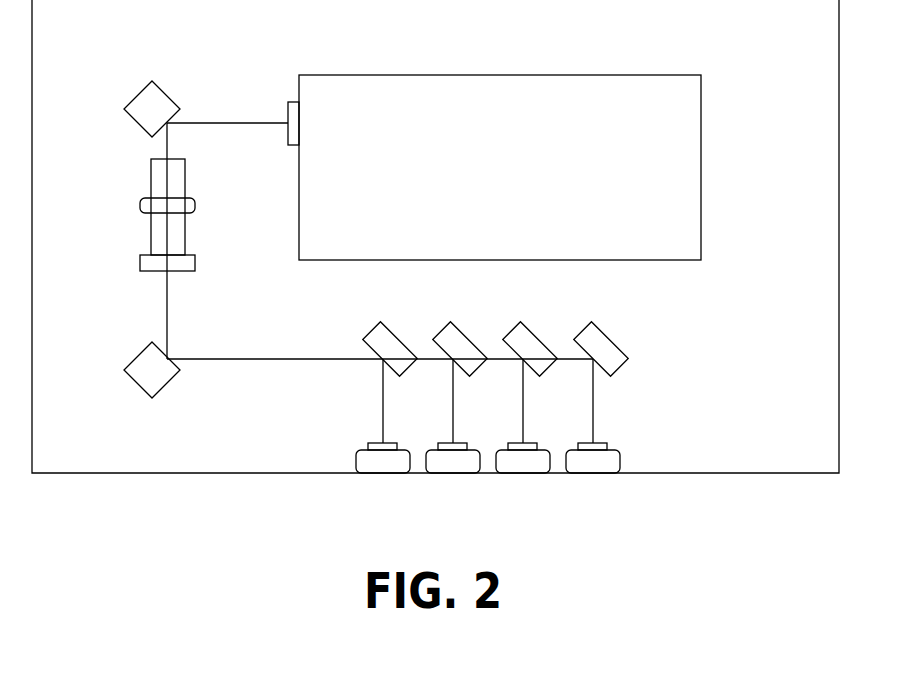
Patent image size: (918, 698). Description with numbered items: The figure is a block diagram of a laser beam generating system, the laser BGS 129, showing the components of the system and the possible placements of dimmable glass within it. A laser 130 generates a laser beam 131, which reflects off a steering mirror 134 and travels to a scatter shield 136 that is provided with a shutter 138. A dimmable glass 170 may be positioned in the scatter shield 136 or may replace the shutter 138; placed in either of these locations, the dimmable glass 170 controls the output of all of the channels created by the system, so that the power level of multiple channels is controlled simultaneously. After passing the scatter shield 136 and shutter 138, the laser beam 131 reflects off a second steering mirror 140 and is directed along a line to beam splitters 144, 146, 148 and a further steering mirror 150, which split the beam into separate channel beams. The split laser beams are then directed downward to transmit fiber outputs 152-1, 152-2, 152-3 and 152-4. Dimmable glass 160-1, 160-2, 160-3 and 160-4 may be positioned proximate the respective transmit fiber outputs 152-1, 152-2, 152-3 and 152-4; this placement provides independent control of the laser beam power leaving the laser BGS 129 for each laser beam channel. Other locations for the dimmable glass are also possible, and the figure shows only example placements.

The laser BGS 129 is at (789, 41).
The laser 130 is at (509, 178).
The laser beam 131 is at (210, 122).
The steering mirror 134 is at (143, 106).
The scatter shield 136 is at (177, 190).
The dimmable glass 170 is at (138, 207).
The shutter 138 is at (188, 263).
The steering mirror 140 is at (142, 365).
The beam splitter 144 is at (400, 334).
The beam splitter 146 is at (470, 334).
The beam splitter 148 is at (543, 334).
The steering mirror 150 is at (613, 334).
The transmit fiber output 152-1 is at (367, 446).
The transmit fiber output 152-2 is at (437, 446).
The transmit fiber output 152-3 is at (507, 446).
The transmit fiber output 152-4 is at (577, 446).
The dimmable glass 160-1 is at (377, 468).
The dimmable glass 160-2 is at (451, 468).
The dimmable glass 160-3 is at (527, 468).
The dimmable glass 160-4 is at (602, 468).